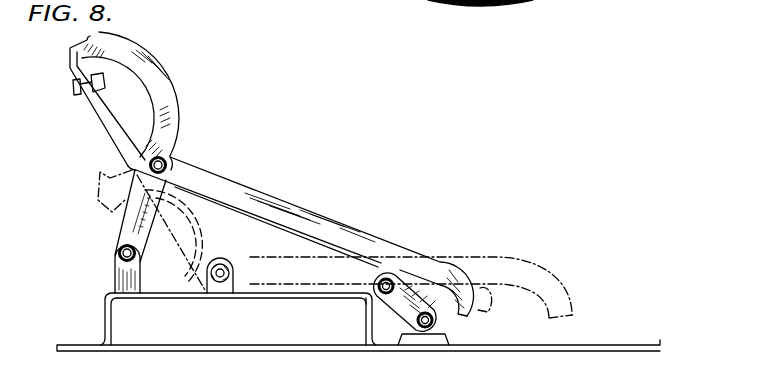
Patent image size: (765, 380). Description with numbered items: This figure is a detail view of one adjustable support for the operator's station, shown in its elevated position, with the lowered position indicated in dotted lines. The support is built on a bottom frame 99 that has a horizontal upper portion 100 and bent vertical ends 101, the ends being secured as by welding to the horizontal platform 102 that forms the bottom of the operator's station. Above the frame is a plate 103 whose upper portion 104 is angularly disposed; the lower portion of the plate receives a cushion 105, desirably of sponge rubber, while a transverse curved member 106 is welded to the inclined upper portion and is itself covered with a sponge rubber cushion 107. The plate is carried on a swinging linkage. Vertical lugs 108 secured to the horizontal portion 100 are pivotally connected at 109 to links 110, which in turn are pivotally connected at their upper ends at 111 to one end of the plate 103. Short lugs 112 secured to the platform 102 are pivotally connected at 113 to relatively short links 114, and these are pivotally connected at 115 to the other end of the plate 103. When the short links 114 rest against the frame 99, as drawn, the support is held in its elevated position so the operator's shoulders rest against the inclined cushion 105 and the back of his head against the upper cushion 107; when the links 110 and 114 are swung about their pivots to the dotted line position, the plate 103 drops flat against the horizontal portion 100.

The bottom frame 99 is at (107, 300).
The horizontal upper portion 100 is at (260, 290).
The bent vertical ends 101 is at (110, 323).
The horizontal platform 102 is at (198, 348).
The plate 103 is at (267, 218).
The angularly disposed upper portion 104 is at (103, 123).
The cushion 105 is at (340, 227).
The transverse curved member 106 is at (150, 97).
The cushion 107 is at (175, 113).
The vertical lugs 108 is at (145, 275).
The pivot 109 is at (120, 250).
The links 110 is at (143, 197).
The pivot 111 is at (168, 162).
The short lugs 112 is at (432, 336).
The pivot 113 is at (417, 328).
The short links 114 is at (408, 297).
The pivot 115 is at (390, 278).